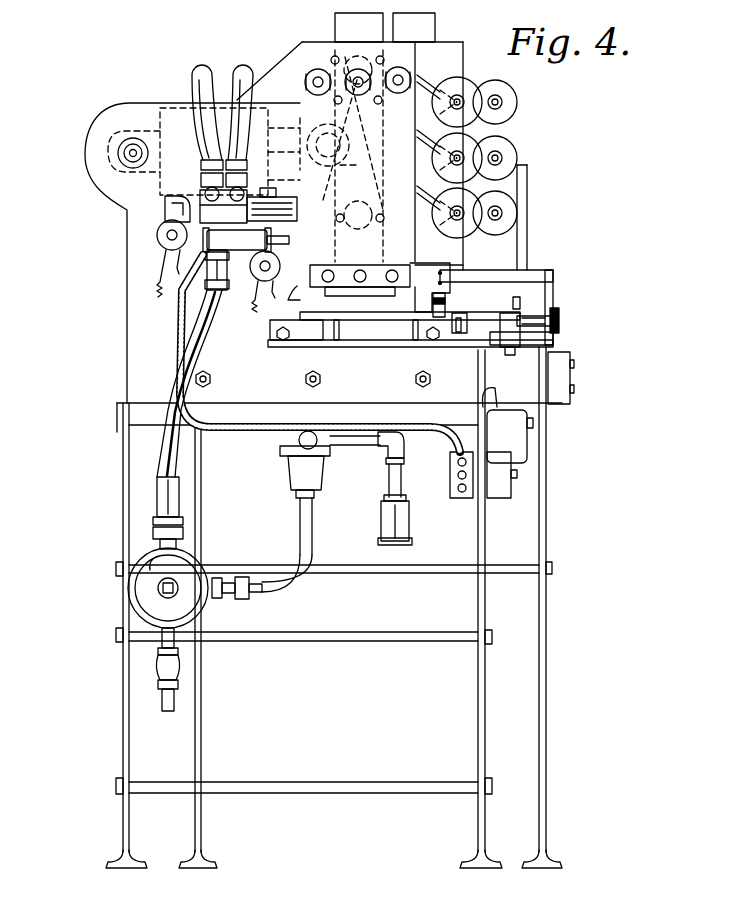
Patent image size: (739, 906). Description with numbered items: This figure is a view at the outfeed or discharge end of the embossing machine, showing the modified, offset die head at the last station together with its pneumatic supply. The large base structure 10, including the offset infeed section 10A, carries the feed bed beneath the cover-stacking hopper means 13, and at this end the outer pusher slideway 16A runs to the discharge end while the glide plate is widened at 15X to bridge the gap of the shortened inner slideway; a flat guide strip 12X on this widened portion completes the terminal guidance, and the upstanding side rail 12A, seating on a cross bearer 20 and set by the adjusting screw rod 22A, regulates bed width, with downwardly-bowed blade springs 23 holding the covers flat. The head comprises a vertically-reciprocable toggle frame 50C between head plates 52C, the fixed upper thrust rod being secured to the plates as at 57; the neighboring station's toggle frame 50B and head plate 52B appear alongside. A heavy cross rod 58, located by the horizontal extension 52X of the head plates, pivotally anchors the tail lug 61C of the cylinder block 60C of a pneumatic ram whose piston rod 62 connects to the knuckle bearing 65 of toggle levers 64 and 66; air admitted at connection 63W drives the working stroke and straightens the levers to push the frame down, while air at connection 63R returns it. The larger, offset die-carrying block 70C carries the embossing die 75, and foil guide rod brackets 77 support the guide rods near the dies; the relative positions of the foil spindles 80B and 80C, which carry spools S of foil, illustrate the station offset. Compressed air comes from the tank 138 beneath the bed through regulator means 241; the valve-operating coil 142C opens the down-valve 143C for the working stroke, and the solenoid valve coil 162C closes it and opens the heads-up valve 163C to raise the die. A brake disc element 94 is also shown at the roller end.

The base structure 10 is at (135, 744).
The offset infeed section 10A is at (204, 732).
The side rail 12A is at (518, 306).
The flat guide strip 12X is at (343, 322).
The cover-stacking hopper means 13 is at (532, 224).
The widened glide plate portion 15X is at (372, 322).
The outer pusher slideway 16A is at (465, 320).
The cross bearer 20 is at (471, 337).
The adjusting screw rod 22A is at (560, 320).
The blade spring 23 is at (430, 300).
The regulator means 241 is at (290, 474).
The tank 138 is at (200, 558).
The toggle frame 50B is at (428, 39).
The toggle frame 50C is at (372, 39).
The head plate 52B is at (448, 45).
The head plate 52C is at (300, 40).
The horizontal extension 52X is at (104, 136).
The thrust rod securing point 57 is at (355, 88).
The cross rod 58 is at (118, 153).
The cylinder block 60C is at (190, 117).
The tail lug 61C is at (112, 124).
The piston rod 62 is at (296, 136).
The return-stroke connection 63R is at (245, 65).
The working-stroke connection 63W is at (200, 65).
The toggle lever 64 is at (350, 176).
The knuckle bearing 65 is at (335, 144).
The toggle lever 66 is at (357, 124).
The die-carrying block 70C is at (318, 300).
The embossing die 75 is at (370, 292).
The foil guide rod bracket 77 is at (422, 275).
The foil spindle 80B is at (500, 160).
The foil spindle 80C is at (460, 98).
The pulley 94 is at (156, 234).
The valve-operating coil 142C is at (257, 200).
The down-valve 143C is at (168, 197).
The solenoid valve coil 162C is at (277, 212).
The heads-up valve 163C is at (200, 212).
The spool S is at (520, 138).